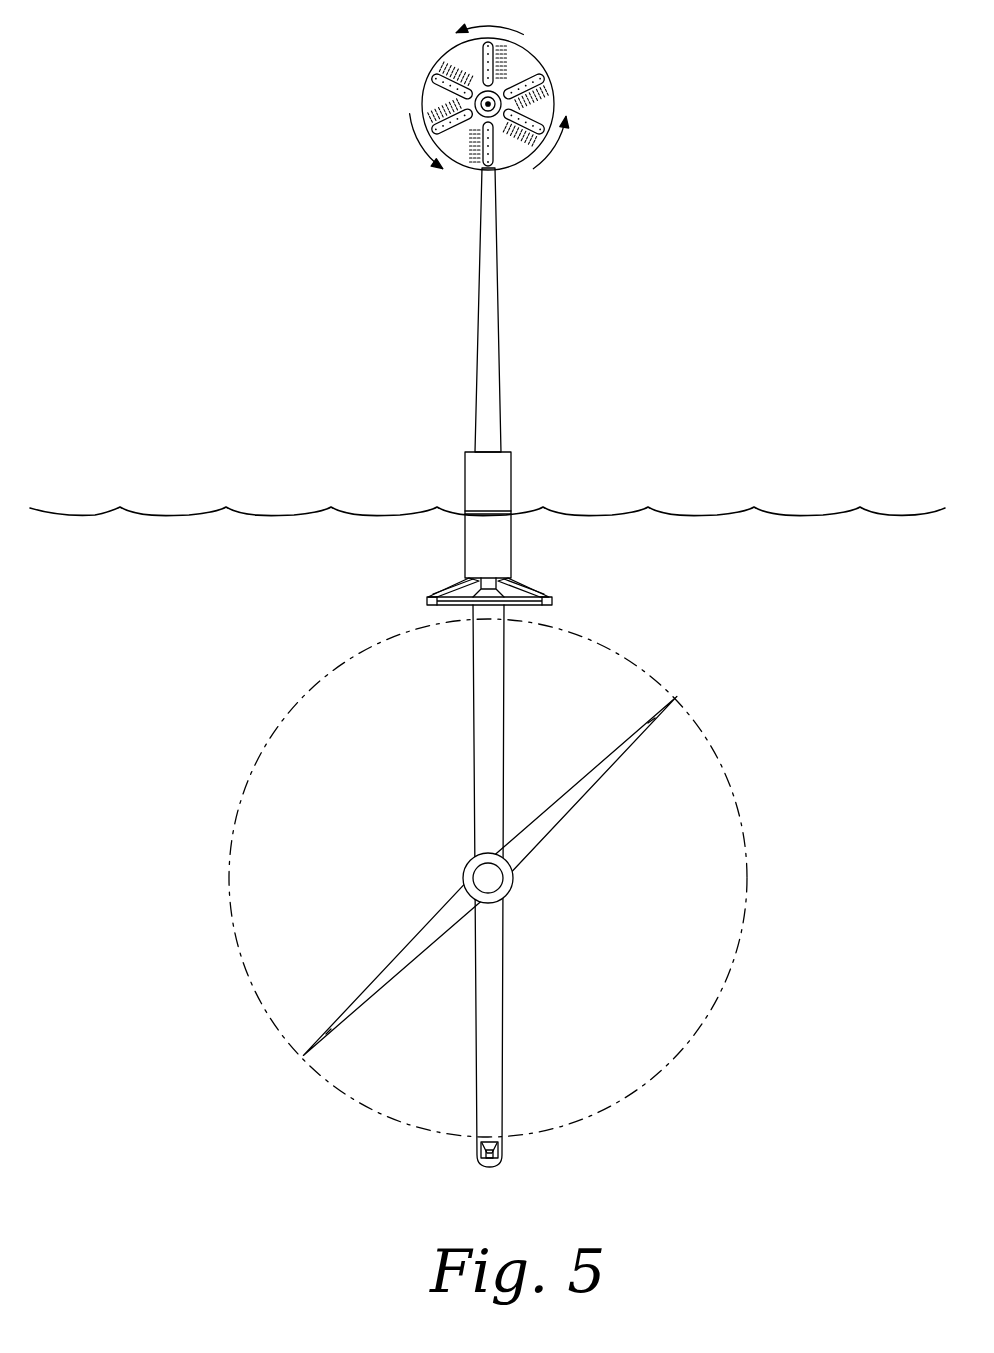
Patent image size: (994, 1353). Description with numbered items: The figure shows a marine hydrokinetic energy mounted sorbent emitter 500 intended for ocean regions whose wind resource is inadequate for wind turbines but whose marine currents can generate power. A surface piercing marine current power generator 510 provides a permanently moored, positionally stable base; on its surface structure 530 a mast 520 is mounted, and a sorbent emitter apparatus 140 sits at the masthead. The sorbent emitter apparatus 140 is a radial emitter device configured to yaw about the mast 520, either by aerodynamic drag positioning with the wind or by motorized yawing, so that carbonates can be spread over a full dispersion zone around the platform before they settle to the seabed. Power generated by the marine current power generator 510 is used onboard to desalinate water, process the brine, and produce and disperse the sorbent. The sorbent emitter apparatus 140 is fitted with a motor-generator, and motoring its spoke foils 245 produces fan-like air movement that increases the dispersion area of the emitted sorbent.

The sorbent emitter apparatus 140 is at (528, 50).
The spoke foils 245 is at (472, 66).
The marine hydrokinetic energy mounted sorbent emitter 500 is at (657, 238).
The surface piercing marine current power generator 510 is at (703, 732).
The mast 520 is at (498, 300).
The surface structure 530 is at (498, 483).